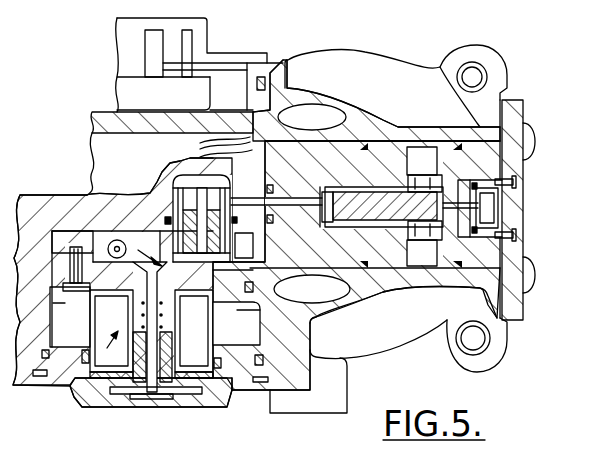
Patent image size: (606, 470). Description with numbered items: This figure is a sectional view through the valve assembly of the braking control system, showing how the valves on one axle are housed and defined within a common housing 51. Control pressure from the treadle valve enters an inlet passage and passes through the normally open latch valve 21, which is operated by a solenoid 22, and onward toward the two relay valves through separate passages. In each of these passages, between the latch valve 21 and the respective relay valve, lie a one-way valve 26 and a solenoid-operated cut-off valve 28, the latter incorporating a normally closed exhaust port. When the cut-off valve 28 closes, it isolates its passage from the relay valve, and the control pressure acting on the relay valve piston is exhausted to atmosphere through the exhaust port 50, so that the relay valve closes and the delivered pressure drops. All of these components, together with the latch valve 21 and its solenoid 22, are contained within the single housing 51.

The latch valve 21 is at (105, 242).
The solenoid 22 is at (92, 380).
The one-way valve 26 is at (163, 221).
The solenoid-operated cut-off valve 28 is at (390, 212).
The exhaust port 50 is at (458, 215).
The common housing 51 is at (134, 129).